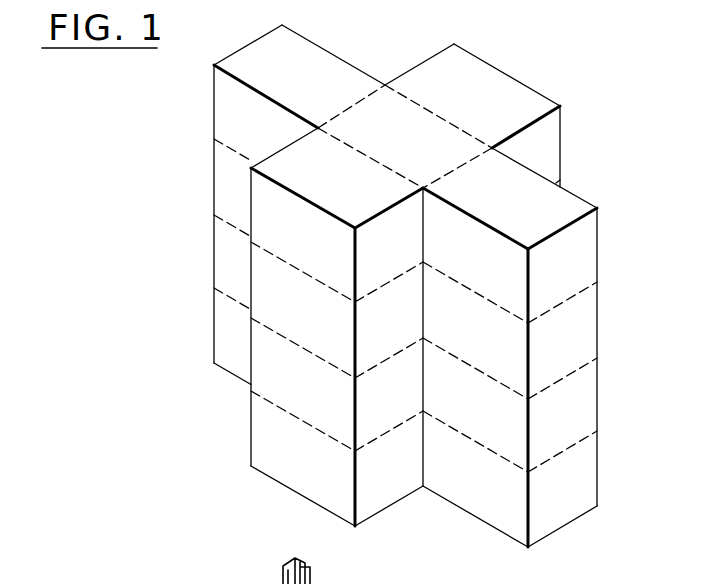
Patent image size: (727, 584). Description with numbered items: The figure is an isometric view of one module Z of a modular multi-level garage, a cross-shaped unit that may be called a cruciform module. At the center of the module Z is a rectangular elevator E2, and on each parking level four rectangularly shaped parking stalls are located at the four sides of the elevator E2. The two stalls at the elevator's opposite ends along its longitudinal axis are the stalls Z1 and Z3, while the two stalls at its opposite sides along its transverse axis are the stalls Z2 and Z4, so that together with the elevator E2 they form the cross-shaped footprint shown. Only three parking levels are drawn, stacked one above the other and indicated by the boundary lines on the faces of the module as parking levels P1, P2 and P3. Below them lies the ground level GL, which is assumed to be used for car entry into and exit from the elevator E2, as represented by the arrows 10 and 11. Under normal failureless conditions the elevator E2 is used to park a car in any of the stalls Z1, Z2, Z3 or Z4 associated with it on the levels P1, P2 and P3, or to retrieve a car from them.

The car entry arrow 10 is at (140, 300).
The car exit arrow 11 is at (613, 551).
The module Z is at (570, 117).
The parking stall Z1 is at (299, 76).
The parking stall Z2 is at (337, 178).
The parking stall Z3 is at (510, 198).
The parking stall Z4 is at (472, 96).
The elevator E2 is at (405, 155).
The parking level P3 is at (405, 231).
The parking level P2 is at (405, 307).
The parking level P1 is at (405, 380).
The ground level GL is at (405, 455).